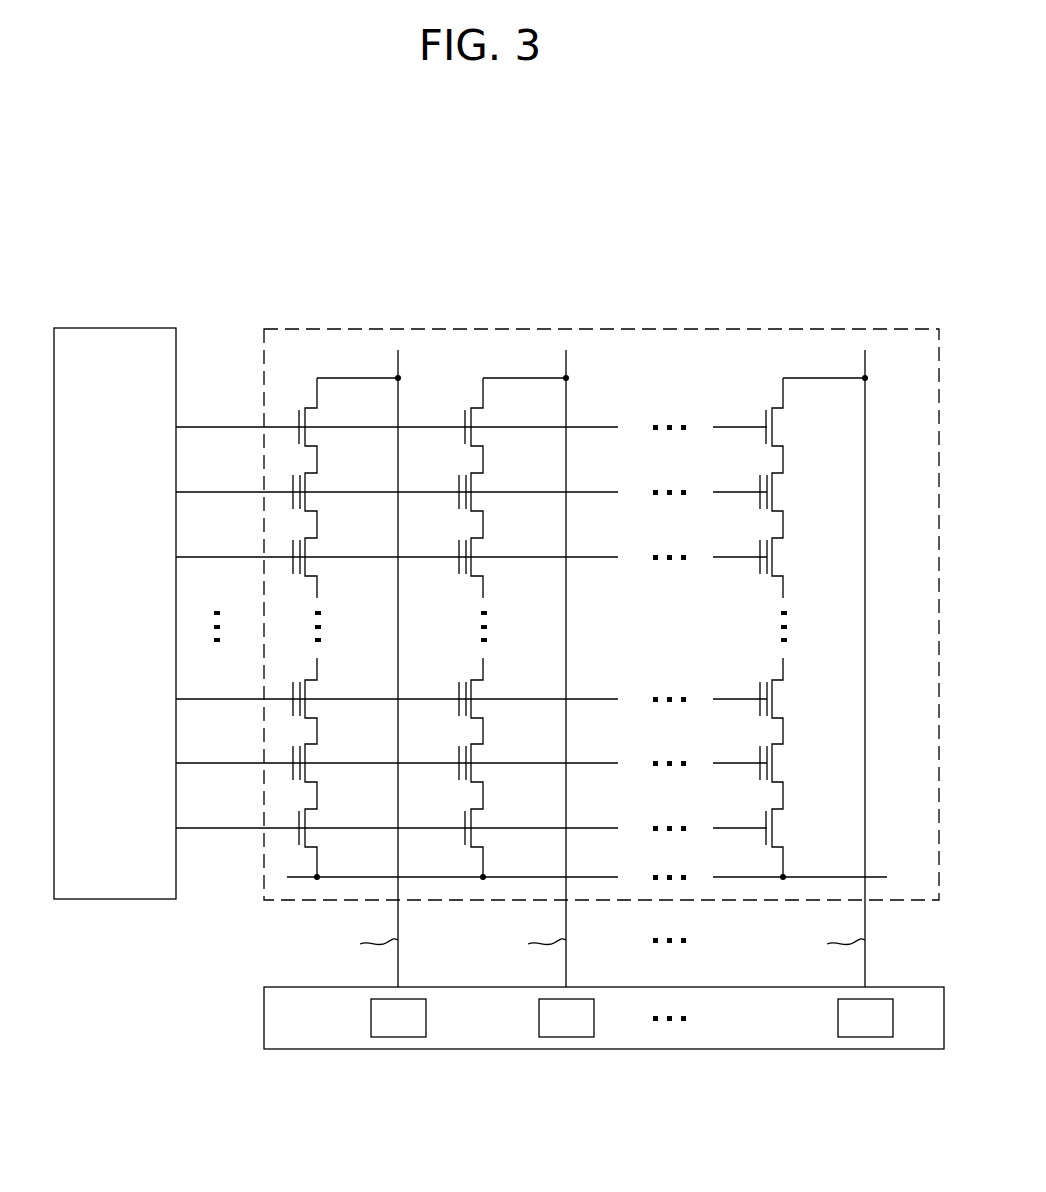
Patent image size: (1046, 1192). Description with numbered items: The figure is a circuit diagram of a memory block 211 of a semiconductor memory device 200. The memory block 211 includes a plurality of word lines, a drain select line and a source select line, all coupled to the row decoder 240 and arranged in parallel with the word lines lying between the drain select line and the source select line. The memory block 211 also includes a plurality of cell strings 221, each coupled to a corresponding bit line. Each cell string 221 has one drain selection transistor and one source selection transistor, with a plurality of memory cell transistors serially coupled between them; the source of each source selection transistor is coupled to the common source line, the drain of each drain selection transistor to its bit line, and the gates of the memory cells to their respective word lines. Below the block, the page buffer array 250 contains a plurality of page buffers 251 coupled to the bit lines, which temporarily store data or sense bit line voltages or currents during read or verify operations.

The memory device 200 is at (914, 229).
The memory block 211 is at (828, 327).
The cell string 221 is at (304, 378).
The row decoder 240 is at (116, 326).
The page buffer array 250 is at (264, 1018).
The page buffer 251 is at (371, 1018).